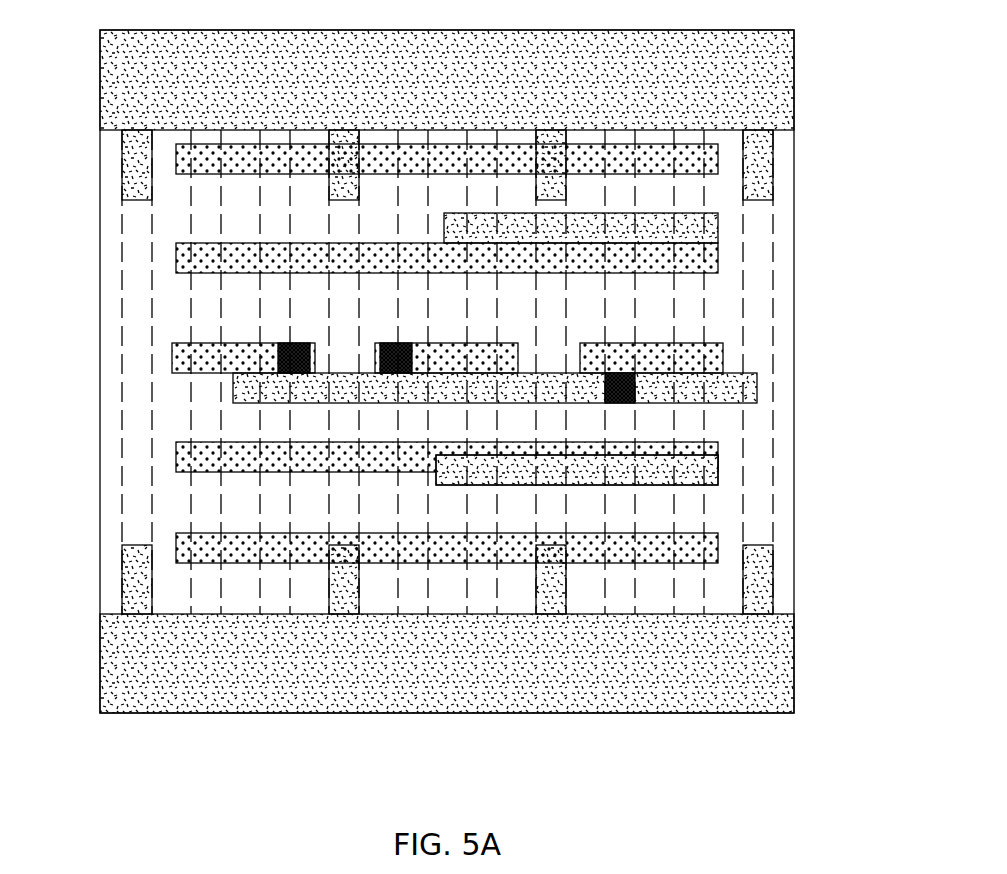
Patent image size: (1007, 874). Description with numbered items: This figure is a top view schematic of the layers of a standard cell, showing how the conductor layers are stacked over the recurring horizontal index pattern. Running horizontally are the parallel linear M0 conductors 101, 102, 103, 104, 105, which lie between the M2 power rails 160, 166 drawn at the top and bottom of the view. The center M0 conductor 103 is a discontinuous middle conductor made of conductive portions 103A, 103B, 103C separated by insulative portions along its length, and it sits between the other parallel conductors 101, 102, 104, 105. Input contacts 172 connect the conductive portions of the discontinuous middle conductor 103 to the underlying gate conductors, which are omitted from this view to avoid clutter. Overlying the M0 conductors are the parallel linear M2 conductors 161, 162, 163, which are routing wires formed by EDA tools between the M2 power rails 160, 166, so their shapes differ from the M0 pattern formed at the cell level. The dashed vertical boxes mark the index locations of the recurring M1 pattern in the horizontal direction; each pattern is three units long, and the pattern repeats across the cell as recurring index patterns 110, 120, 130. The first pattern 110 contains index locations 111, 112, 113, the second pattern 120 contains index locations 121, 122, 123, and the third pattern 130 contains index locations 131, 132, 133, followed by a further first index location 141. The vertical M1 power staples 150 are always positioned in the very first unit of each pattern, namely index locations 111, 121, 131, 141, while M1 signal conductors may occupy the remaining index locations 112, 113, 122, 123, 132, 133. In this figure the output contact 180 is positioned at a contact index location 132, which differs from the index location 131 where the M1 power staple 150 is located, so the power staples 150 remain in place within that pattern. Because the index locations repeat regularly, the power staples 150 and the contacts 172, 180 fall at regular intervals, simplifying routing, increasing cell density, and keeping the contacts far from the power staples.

The M0 conductor 101 is at (176, 157).
The M0 conductor 102 is at (176, 256).
The discontinuous middle M0 conductor 103 is at (379, 358).
The conductive portion of discontinuous middle conductor 103A is at (213, 368).
The conductive portion of discontinuous middle conductor 103B is at (420, 368).
The conductive portion of discontinuous middle conductor 103C is at (625, 368).
The M0 conductor 104 is at (176, 455).
The M0 conductor 105 is at (176, 550).
The recurring index pattern 110 is at (205, 470).
The first index location 111 is at (137, 616).
The second index location 112 is at (206, 616).
The third index location 113 is at (275, 446).
The recurring index pattern 120 is at (413, 470).
The first index location 121 is at (344, 616).
The second index location 122 is at (413, 616).
The third index location 123 is at (482, 446).
The recurring index pattern 130 is at (620, 470).
The first index location 131 is at (551, 616).
The contact index location 132 is at (620, 616).
The third index location 133 is at (689, 446).
The first index location 141 is at (758, 616).
The M1 power staple 150 is at (153, 136).
The M2 power rail 160 is at (100, 80).
The M2 conductor 161 is at (718, 228).
The M2 conductor 162 is at (757, 388).
The M2 conductor 163 is at (718, 466).
The M2 power rail 166 is at (100, 660).
The input contact 172 is at (385, 342).
The output contact 180 is at (638, 388).